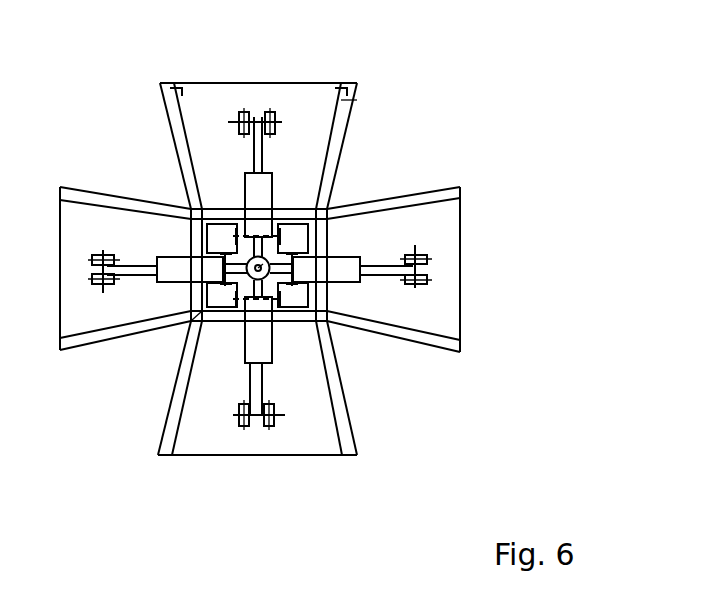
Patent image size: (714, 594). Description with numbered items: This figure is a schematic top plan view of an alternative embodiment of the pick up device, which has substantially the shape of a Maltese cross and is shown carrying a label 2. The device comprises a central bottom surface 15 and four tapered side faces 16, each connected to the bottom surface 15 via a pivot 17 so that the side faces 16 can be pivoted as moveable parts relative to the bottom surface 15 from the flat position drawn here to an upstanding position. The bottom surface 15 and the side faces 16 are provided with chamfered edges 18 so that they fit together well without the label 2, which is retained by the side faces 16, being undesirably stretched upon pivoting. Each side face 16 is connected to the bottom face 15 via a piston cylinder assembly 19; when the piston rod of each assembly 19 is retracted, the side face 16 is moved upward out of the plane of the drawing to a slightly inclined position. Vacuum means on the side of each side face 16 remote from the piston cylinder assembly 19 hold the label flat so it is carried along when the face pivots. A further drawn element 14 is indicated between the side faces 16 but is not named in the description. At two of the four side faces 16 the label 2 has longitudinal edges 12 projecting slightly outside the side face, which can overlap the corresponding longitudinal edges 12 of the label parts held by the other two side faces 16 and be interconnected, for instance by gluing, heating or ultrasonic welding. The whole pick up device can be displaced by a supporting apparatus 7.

The label 2 is at (212, 76).
The supporting apparatus 7 is at (191, 328).
The longitudinal edges 12 is at (168, 118).
The recess between chambers 14 is at (390, 147).
The bottom surface 15 is at (296, 237).
The tapered side faces 16 is at (440, 308).
The pivot 17 is at (257, 267).
The chamfered edges 18 is at (172, 87).
The piston cylinder assembly 19 is at (350, 257).